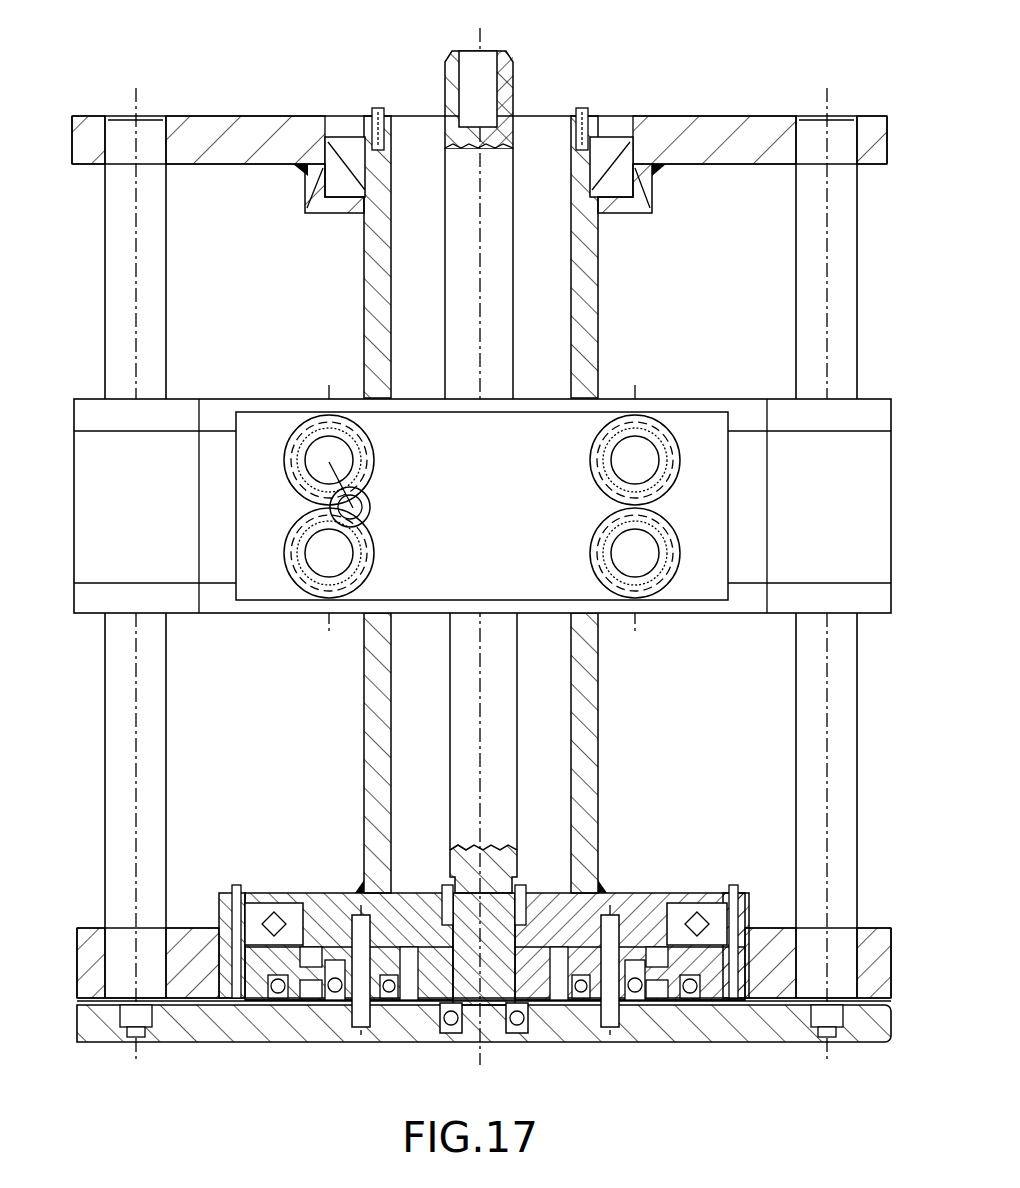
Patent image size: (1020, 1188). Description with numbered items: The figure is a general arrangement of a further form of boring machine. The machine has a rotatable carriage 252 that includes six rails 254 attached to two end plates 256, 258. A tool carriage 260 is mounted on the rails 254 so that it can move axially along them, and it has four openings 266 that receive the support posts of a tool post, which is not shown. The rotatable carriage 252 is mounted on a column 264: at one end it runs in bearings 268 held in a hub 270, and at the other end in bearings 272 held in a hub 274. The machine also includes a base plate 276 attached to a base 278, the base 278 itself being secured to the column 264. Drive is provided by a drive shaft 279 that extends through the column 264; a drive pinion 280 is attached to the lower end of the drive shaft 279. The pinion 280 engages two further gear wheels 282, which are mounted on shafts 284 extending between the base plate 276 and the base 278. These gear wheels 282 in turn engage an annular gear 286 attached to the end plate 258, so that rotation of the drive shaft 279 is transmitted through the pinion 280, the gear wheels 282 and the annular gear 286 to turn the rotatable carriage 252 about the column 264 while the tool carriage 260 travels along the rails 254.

The rotatable carriage 252 is at (880, 238).
The rails 254 is at (120, 719).
The end plate 256 is at (886, 118).
The end plate 258 is at (878, 942).
The tool carriage 260 is at (877, 569).
The column 264 is at (588, 704).
The openings 266 is at (642, 448).
The bearings 268 is at (608, 147).
The hub 270 is at (640, 204).
The bearings 272 is at (702, 903).
The hub 274 is at (238, 893).
The base plate 276 is at (283, 1005).
The base 278 is at (318, 893).
The drive shaft 279 is at (517, 785).
The drive pinion 280 is at (548, 1000).
The gear wheels 282 is at (410, 1033).
The shafts 284 is at (366, 1028).
The annular gear 286 is at (683, 992).